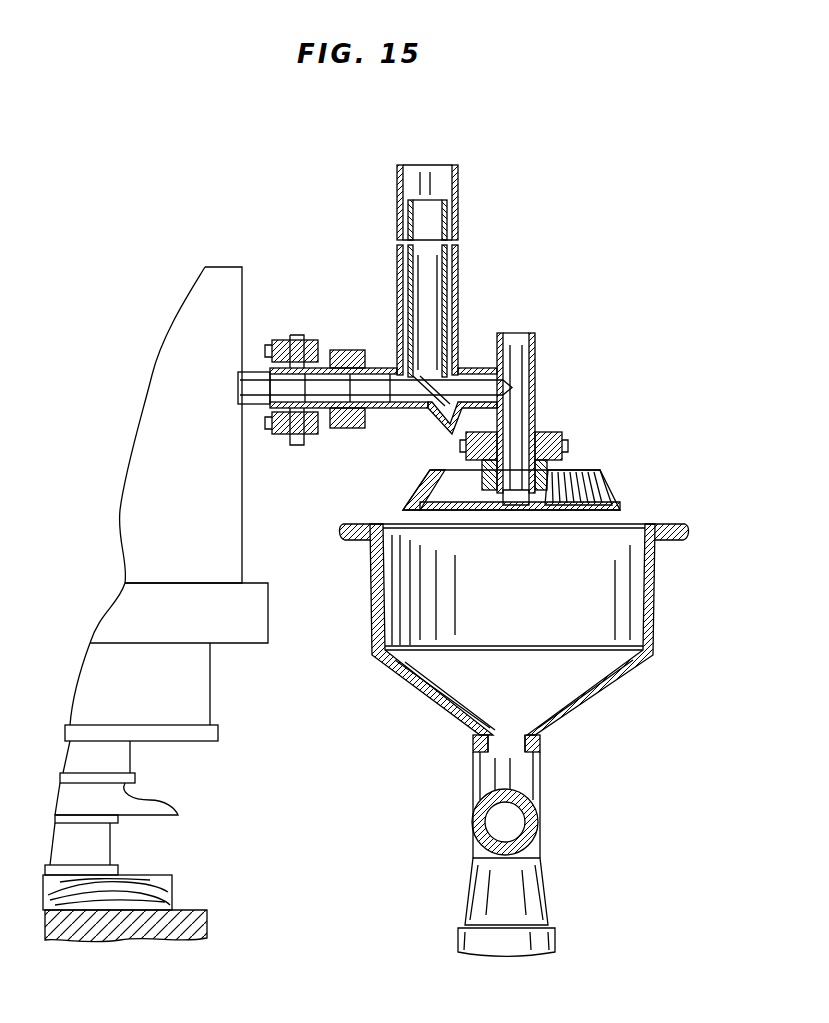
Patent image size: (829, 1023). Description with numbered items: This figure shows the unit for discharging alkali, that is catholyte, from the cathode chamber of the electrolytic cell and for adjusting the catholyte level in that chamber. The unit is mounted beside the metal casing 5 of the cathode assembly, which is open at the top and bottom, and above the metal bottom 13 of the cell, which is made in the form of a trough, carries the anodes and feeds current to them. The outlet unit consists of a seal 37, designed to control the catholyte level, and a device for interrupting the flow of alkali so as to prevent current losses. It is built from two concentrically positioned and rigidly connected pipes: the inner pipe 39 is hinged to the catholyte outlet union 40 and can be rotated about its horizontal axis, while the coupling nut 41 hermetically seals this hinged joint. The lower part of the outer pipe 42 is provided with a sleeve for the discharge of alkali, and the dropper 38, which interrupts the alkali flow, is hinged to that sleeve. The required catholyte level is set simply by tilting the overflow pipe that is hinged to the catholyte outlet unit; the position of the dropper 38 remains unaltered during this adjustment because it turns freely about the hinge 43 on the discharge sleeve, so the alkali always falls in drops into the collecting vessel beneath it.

The metal casing 5 is at (232, 503).
The metal bottom 13 is at (208, 697).
The seal 37 is at (478, 325).
The dropper 38 is at (605, 482).
The inner pipe 39 is at (423, 286).
The catholyte outlet union 40 is at (317, 408).
The coupling nut 41 is at (340, 352).
The outer pipe 42 is at (397, 197).
The hinge 43 is at (555, 446).